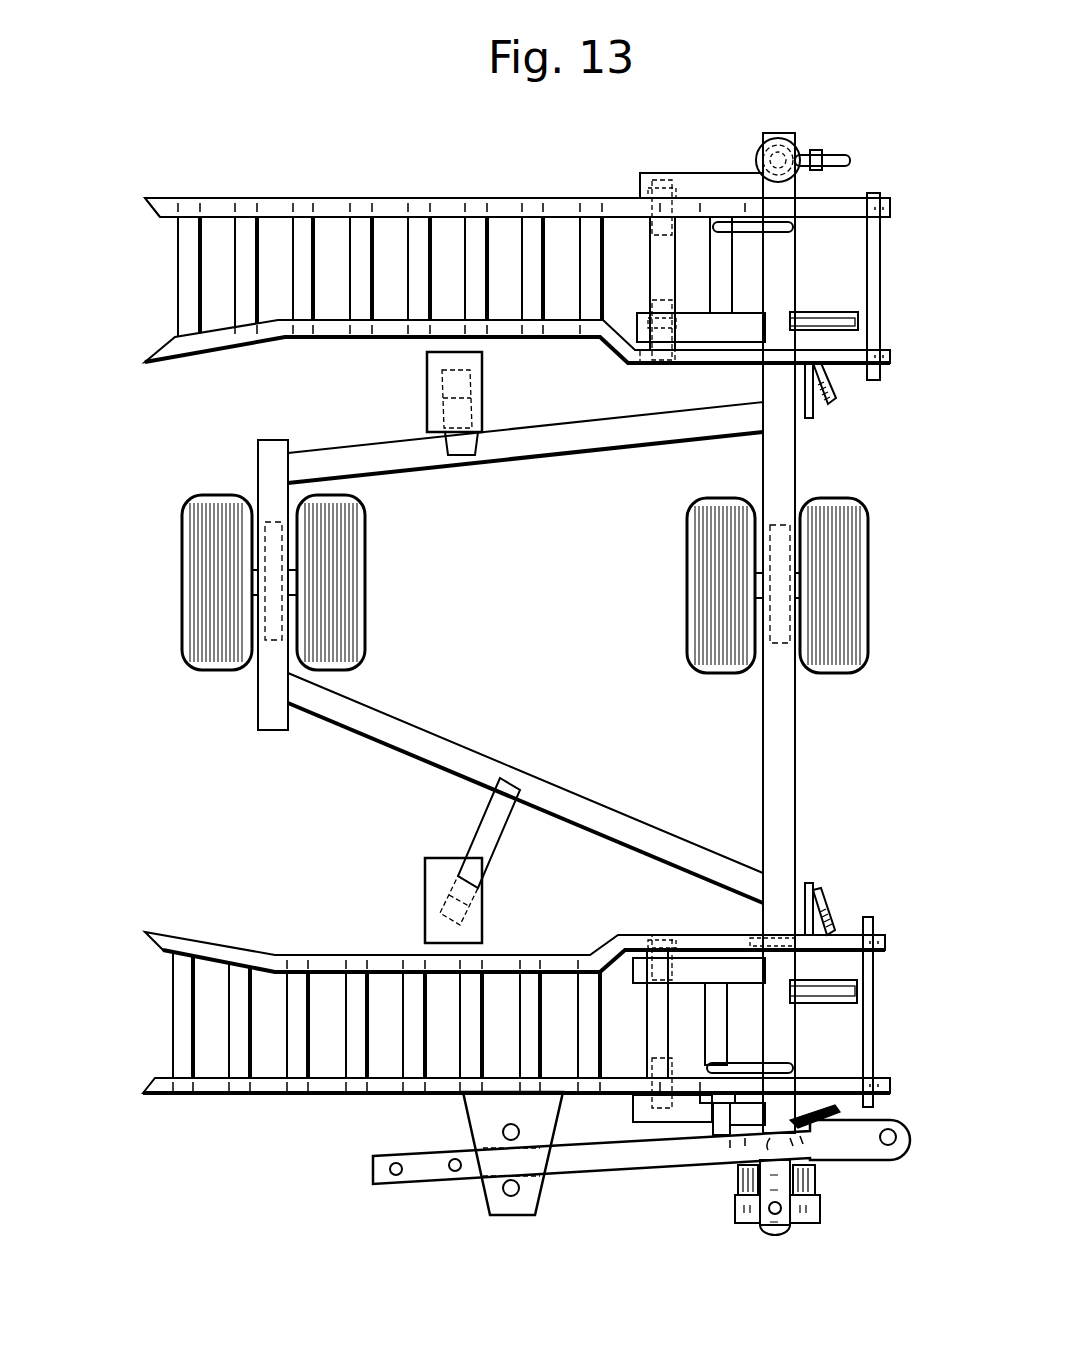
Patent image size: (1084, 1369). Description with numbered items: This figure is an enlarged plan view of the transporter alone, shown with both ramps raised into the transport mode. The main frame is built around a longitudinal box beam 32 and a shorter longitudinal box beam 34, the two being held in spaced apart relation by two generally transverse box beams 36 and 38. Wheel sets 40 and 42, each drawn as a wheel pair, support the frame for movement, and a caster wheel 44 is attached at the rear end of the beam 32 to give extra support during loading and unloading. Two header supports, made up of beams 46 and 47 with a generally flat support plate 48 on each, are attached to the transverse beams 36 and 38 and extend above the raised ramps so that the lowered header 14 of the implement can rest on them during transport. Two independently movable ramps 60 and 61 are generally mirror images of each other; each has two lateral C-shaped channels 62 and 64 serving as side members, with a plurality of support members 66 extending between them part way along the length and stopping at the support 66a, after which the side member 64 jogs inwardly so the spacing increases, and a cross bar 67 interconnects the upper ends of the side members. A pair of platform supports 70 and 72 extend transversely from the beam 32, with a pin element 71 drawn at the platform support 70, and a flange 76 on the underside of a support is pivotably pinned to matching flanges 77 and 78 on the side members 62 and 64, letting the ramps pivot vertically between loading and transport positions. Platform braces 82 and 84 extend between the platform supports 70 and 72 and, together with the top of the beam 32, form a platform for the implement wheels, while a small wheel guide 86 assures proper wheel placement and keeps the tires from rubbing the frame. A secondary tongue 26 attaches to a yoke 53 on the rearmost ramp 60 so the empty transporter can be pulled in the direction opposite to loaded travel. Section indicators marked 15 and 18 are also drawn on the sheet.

The header 14 is at (660, 1130).
The section line for FIG. 15 is at (845, 975).
The section line for FIG. 18 is at (900, 70).
The secondary tongue 26 is at (630, 1162).
The longitudinal box beam 32 is at (783, 463).
The shorter longitudinal box beam 34 is at (270, 694).
The transverse box beam 36 is at (405, 745).
The transverse box beam 38 is at (512, 445).
The wheel set 40 is at (181, 548).
The wheel set 42 is at (860, 565).
The caster wheel 44 is at (800, 1230).
The header support beam 46 is at (490, 832).
The header support beam 47 is at (460, 440).
The support plate 48 is at (485, 357).
The yoke 53 is at (497, 1200).
The ramp 60 is at (312, 930).
The ramp 61 is at (520, 249).
The C-shaped channel 62 is at (337, 205).
The C-shaped channel 64 is at (340, 323).
The support members 66 is at (190, 270).
The support 66a is at (586, 233).
The cross bar 67 is at (892, 296).
The platform support 70 is at (708, 183).
The pivot bolt 71 is at (683, 193).
The platform support 72 is at (725, 325).
The flange 76 is at (652, 355).
The flange 77 is at (652, 217).
The flange 78 is at (650, 325).
The platform brace 82 is at (665, 280).
The platform brace 84 is at (725, 290).
The wheel guide 86 is at (778, 228).